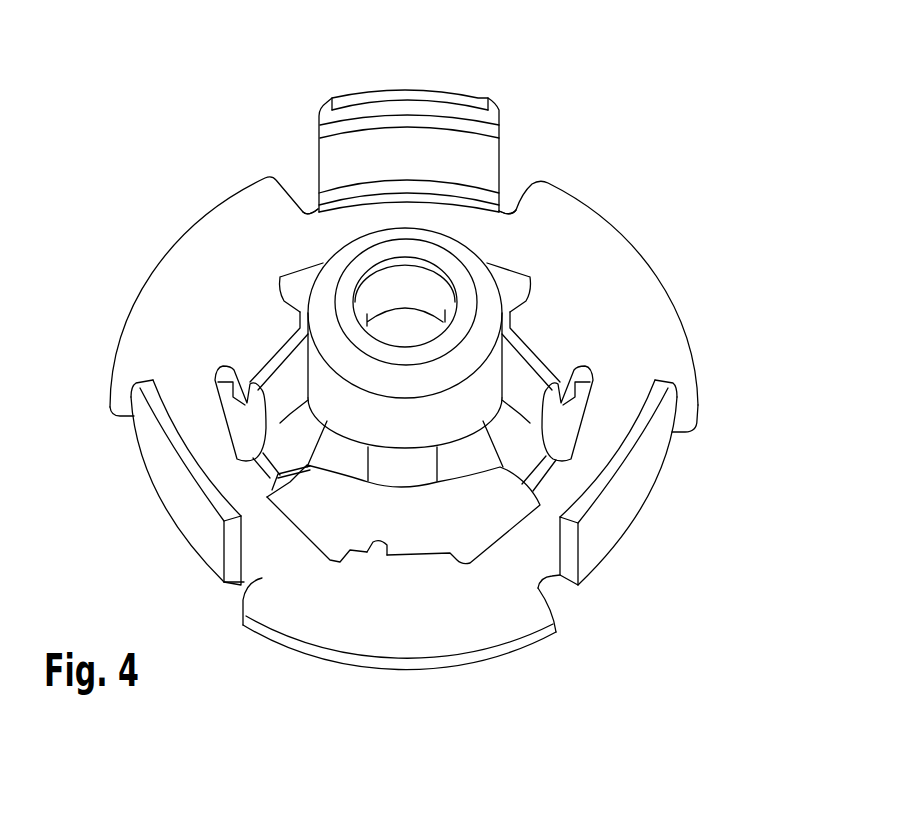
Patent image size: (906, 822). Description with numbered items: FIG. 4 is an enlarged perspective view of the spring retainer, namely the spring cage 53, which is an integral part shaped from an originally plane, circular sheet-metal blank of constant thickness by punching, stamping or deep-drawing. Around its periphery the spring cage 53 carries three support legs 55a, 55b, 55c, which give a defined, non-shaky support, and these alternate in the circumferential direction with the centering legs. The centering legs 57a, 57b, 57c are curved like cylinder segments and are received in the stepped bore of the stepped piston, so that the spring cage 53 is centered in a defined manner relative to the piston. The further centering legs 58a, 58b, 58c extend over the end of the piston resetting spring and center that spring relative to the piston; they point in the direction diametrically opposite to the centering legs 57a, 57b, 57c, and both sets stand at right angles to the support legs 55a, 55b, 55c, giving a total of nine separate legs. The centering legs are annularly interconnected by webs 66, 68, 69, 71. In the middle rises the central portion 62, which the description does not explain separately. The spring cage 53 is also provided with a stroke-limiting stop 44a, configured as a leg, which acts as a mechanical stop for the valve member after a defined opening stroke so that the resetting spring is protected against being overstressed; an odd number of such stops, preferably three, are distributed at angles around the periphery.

The spring cage 53 is at (626, 233).
The support leg 55a is at (293, 620).
The support leg 55b is at (170, 300).
The support leg 55c is at (637, 303).
The centering leg 57a is at (386, 545).
The centering leg 57b is at (257, 423).
The centering leg 57c is at (578, 430).
The centering leg 58a is at (192, 487).
The centering leg 58b is at (414, 94).
The centering leg 58c is at (613, 487).
The hub sleeve 62 is at (455, 268).
The web 66 is at (272, 563).
The web 68 is at (313, 227).
The web 69 is at (513, 215).
The web 71 is at (530, 568).
The stroke-limiting stop 44a is at (404, 490).